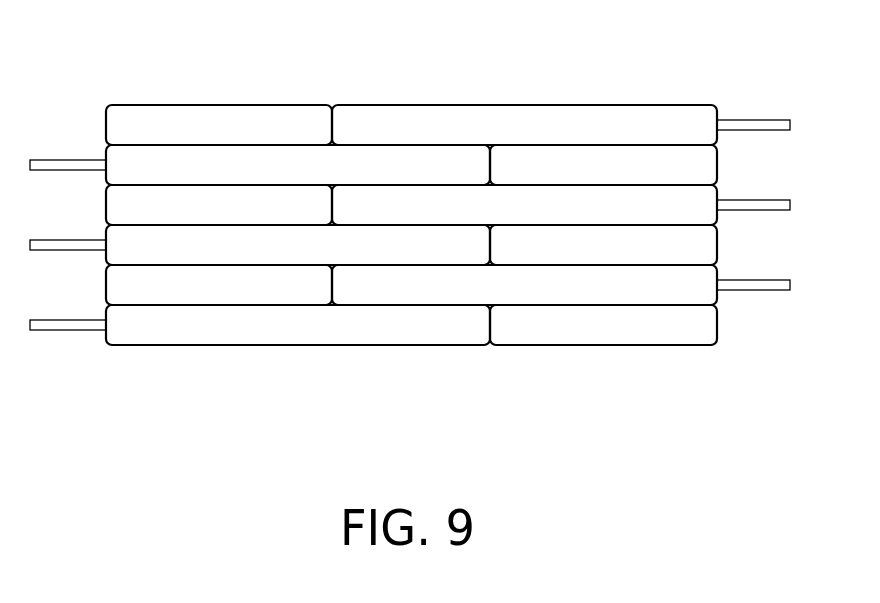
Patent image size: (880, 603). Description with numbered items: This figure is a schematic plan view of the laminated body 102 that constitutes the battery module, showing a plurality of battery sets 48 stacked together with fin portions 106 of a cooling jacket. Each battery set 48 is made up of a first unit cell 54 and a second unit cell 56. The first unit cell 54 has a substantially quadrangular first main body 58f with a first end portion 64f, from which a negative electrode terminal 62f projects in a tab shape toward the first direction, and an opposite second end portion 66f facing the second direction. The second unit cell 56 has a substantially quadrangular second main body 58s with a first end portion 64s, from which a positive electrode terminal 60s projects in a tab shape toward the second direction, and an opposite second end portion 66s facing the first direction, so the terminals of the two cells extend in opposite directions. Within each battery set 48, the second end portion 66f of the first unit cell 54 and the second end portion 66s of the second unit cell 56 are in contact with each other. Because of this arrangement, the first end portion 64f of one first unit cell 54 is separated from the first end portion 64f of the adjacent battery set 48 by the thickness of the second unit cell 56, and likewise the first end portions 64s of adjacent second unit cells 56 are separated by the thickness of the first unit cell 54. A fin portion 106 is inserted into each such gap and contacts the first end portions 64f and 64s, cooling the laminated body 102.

The laminated body 102 is at (689, 90).
The battery set 48 is at (587, 52).
The first unit cell 54 is at (481, 139).
The second unit cell 56 is at (589, 95).
The fin portion 106 is at (205, 287).
The negative electrode terminal 62f is at (52, 320).
The positive electrode terminal 60s is at (765, 306).
The first end portion 64f is at (128, 330).
The first main body 58f is at (252, 330).
The second end portion 66f is at (368, 332).
The first end portion 64s is at (702, 285).
The second main body 58s is at (577, 285).
The second end portion 66s is at (460, 285).